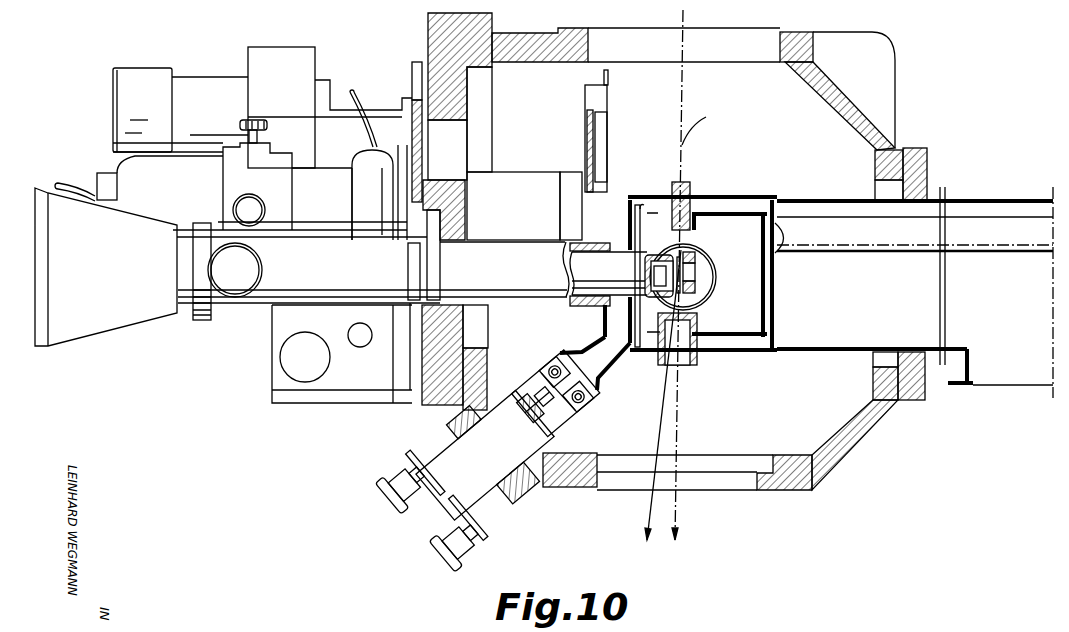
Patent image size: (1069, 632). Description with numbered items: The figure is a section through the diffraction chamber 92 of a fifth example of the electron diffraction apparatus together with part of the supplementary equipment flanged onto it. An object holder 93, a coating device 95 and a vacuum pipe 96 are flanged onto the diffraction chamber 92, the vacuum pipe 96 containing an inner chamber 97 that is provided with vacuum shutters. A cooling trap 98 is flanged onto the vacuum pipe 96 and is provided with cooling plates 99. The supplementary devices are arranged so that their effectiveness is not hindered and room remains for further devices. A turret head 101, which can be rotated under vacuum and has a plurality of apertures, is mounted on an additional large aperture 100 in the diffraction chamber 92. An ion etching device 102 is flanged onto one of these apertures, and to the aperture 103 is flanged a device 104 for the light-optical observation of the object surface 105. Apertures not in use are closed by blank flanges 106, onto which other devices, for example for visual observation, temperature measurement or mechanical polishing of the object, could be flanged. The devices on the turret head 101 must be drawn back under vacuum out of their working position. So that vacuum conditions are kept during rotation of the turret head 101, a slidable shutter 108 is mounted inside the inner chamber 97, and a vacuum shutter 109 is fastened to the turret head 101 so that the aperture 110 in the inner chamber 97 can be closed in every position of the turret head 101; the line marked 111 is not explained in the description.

The diffraction chamber 92 is at (570, 486).
The object holder 93 is at (696, 290).
The coating device 95 is at (500, 453).
The vacuum pipe 96 is at (863, 350).
The inner chamber 97 is at (733, 351).
The cooling trap 98 is at (886, 238).
The cooling plates 99 is at (718, 328).
The additional large aperture 100 is at (483, 113).
The turret head 101 is at (428, 40).
The ion etching device 102 is at (532, 210).
The aperture 103 is at (465, 312).
The device for light-optical observation 104 is at (527, 275).
The object surface 105 is at (696, 258).
The blank flanges 106 is at (412, 95).
The shutter 108 is at (644, 209).
The vacuum shutter 109 is at (609, 101).
The aperture 110 is at (640, 228).
The optical axis 111 is at (687, 275).